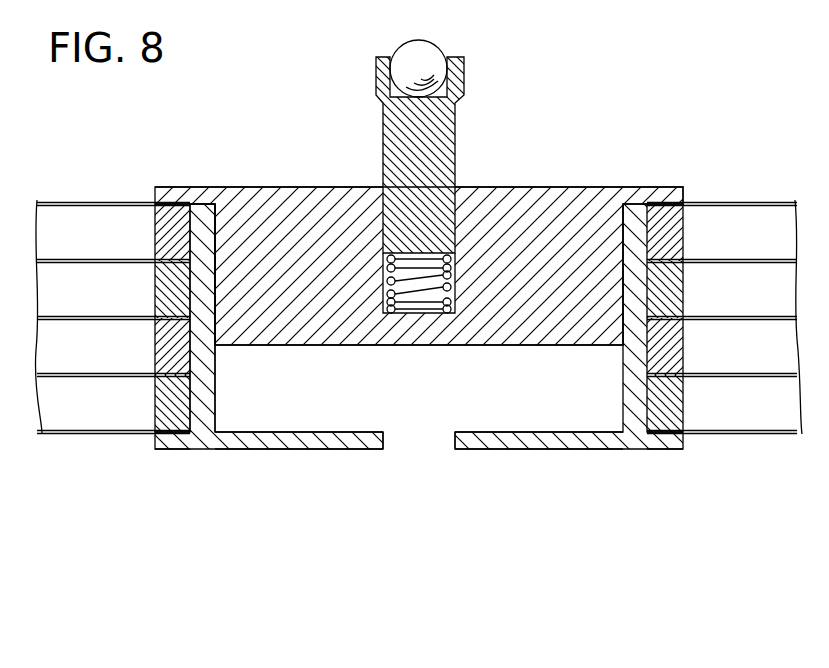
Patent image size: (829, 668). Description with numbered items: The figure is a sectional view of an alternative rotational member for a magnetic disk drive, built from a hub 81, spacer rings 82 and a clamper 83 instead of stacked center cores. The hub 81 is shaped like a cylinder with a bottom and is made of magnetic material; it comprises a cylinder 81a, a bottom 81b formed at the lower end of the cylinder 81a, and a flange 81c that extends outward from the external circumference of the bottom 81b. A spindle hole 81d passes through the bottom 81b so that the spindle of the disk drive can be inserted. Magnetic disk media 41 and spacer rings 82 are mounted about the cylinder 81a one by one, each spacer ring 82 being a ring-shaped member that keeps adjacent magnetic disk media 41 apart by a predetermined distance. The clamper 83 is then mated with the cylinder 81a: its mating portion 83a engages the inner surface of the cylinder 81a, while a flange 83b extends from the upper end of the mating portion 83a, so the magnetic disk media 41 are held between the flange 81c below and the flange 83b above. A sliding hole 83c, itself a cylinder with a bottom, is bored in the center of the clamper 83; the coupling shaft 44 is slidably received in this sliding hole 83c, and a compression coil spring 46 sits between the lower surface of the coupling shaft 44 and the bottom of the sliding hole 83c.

The magnetic disk media 41 is at (82, 378).
The coupling shaft 44 is at (479, 56).
The compression coil spring 46 is at (448, 255).
The hub 81 is at (204, 459).
The cylinder 81a is at (210, 385).
The bottom 81b is at (352, 440).
The flange 81c is at (172, 440).
The spindle hole 81d is at (445, 449).
The spacer ring 82 is at (667, 343).
The clamper 83 is at (535, 181).
The mating portion 83a is at (590, 300).
The flange 83b is at (655, 197).
The sliding hole 83c is at (396, 215).